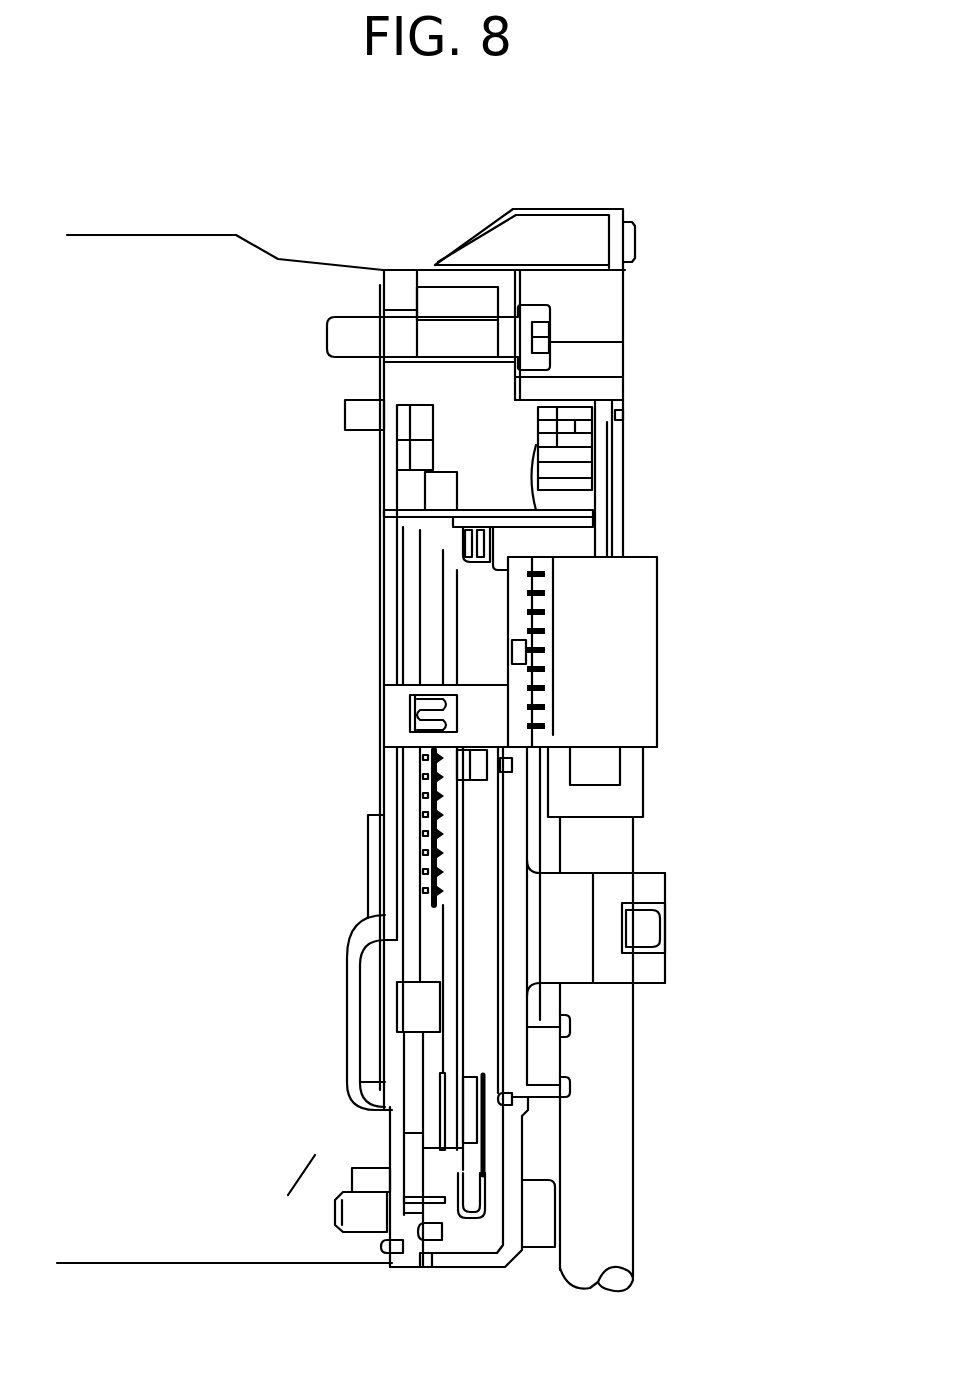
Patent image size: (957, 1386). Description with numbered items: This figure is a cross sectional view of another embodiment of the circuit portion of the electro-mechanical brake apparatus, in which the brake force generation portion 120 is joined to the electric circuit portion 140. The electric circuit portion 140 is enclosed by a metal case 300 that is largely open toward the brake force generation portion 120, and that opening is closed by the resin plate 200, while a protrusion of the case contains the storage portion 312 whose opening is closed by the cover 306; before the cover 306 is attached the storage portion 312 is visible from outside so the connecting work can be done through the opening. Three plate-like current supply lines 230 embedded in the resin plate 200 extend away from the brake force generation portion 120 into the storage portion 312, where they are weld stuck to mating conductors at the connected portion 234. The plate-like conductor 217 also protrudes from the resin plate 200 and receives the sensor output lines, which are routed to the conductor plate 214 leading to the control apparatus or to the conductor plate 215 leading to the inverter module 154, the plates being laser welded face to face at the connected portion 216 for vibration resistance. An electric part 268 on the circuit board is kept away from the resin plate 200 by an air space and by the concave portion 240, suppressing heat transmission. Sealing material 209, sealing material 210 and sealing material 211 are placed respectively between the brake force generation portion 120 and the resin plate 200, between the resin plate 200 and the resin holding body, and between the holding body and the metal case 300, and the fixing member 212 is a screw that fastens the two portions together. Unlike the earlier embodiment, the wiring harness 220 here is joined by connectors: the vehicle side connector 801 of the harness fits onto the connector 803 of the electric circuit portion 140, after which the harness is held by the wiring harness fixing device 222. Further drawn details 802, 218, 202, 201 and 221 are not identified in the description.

The brake force generation portion 120 is at (152, 262).
The electric circuit portion 140 is at (862, 425).
The storage portion 312 is at (603, 386).
The cover 306 is at (617, 457).
The connected portion 234 is at (593, 514).
The current supply line 230 is at (487, 512).
The vehicle side connector 801 is at (638, 667).
The coil 802 is at (555, 597).
The electric circuit portion side connector 803 is at (520, 652).
The spring housing 218 is at (415, 705).
The plate-like conductor 217 is at (415, 723).
The rack 202 is at (440, 806).
The resin plate 200 is at (378, 862).
The electric part 268 is at (405, 1007).
The concave portion 240 is at (368, 1028).
The guide 201 is at (430, 1072).
The fixing member 212 is at (350, 1178).
The sealing material 209 is at (393, 1255).
The sealing material 210 is at (435, 1240).
The metal case 300 is at (512, 839).
The lower housing 221 is at (573, 965).
The wiring harness fixing device 222 is at (650, 900).
The inverter module 154 is at (483, 1017).
The wiring harness 220 is at (617, 1062).
The conductor plate 215 is at (512, 1097).
The sealing material 211 is at (530, 1100).
The connected portion 216 is at (490, 1165).
The conductor plate 214 is at (480, 1195).